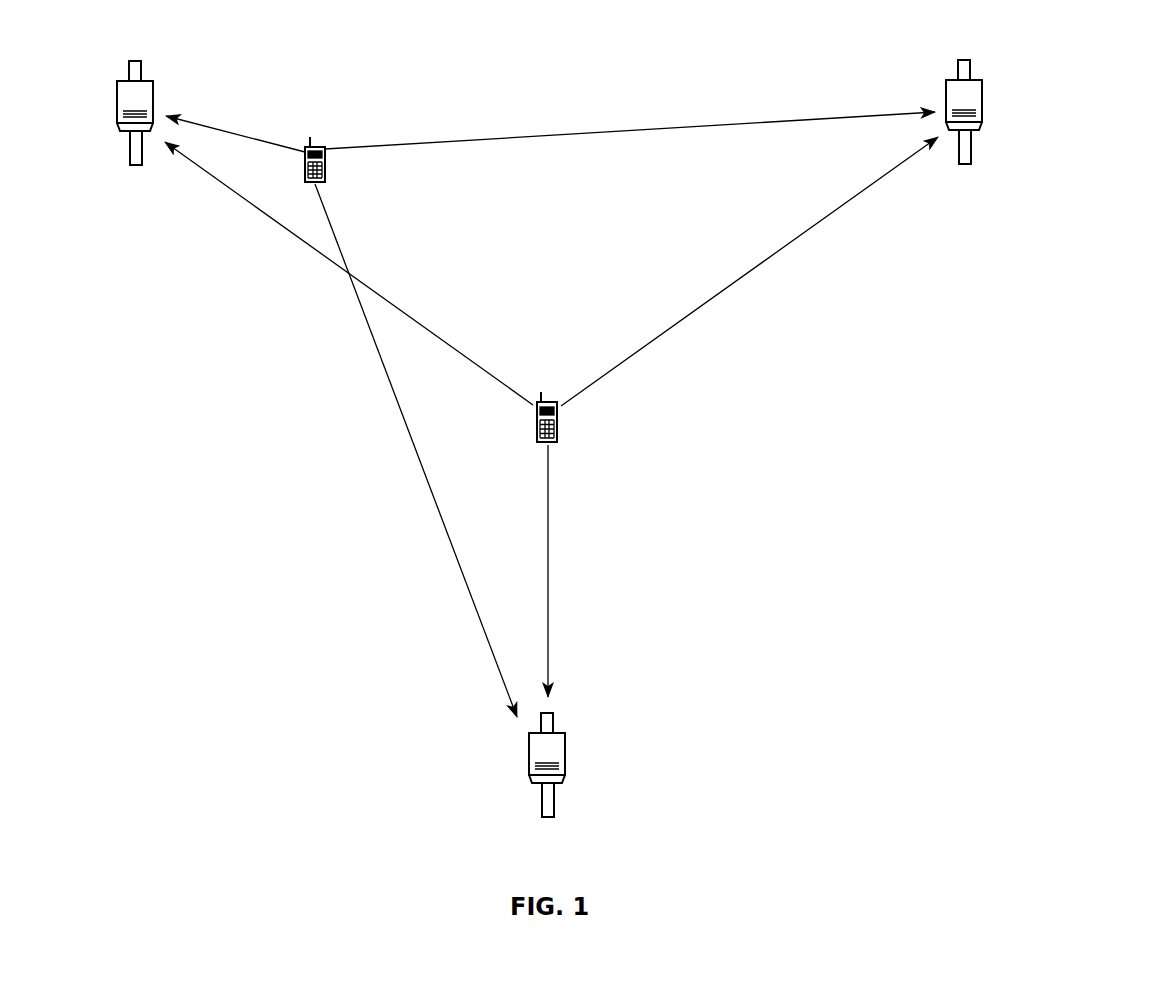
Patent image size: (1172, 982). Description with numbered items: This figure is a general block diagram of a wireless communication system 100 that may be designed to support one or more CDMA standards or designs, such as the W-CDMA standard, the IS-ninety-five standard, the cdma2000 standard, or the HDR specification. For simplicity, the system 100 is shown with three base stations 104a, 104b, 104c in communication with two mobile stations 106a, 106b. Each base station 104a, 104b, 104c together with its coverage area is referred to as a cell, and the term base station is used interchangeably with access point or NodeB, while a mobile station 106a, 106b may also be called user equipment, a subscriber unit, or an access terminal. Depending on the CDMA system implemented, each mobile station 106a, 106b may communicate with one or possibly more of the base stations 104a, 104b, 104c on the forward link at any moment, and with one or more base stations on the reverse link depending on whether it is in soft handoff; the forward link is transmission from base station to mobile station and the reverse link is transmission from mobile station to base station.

The wireless communication system 100 is at (1112, 66).
The base station 104a is at (142, 74).
The base station 104b is at (971, 74).
The base station 104c is at (554, 726).
The mobile station 106a is at (318, 147).
The mobile station 106b is at (541, 443).